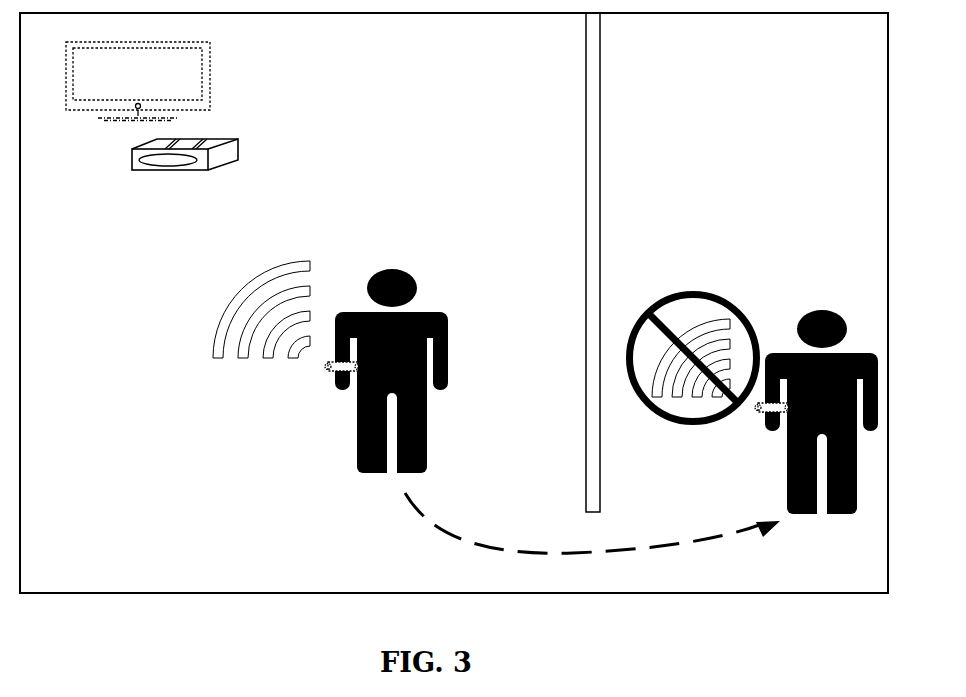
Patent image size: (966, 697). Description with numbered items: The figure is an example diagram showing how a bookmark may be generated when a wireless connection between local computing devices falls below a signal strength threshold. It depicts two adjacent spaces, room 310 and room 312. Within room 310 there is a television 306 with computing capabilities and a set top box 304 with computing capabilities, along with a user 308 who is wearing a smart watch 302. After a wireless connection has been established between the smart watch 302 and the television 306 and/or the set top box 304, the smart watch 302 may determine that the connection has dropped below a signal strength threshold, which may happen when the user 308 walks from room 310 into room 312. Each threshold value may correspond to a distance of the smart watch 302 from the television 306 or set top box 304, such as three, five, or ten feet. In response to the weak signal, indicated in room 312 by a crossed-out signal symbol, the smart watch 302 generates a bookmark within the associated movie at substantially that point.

The smart watch 302 is at (328, 367).
The set top box 304 is at (238, 139).
The television 306 is at (210, 55).
The user 308 is at (383, 270).
The room 310 is at (463, 134).
The room 312 is at (705, 134).